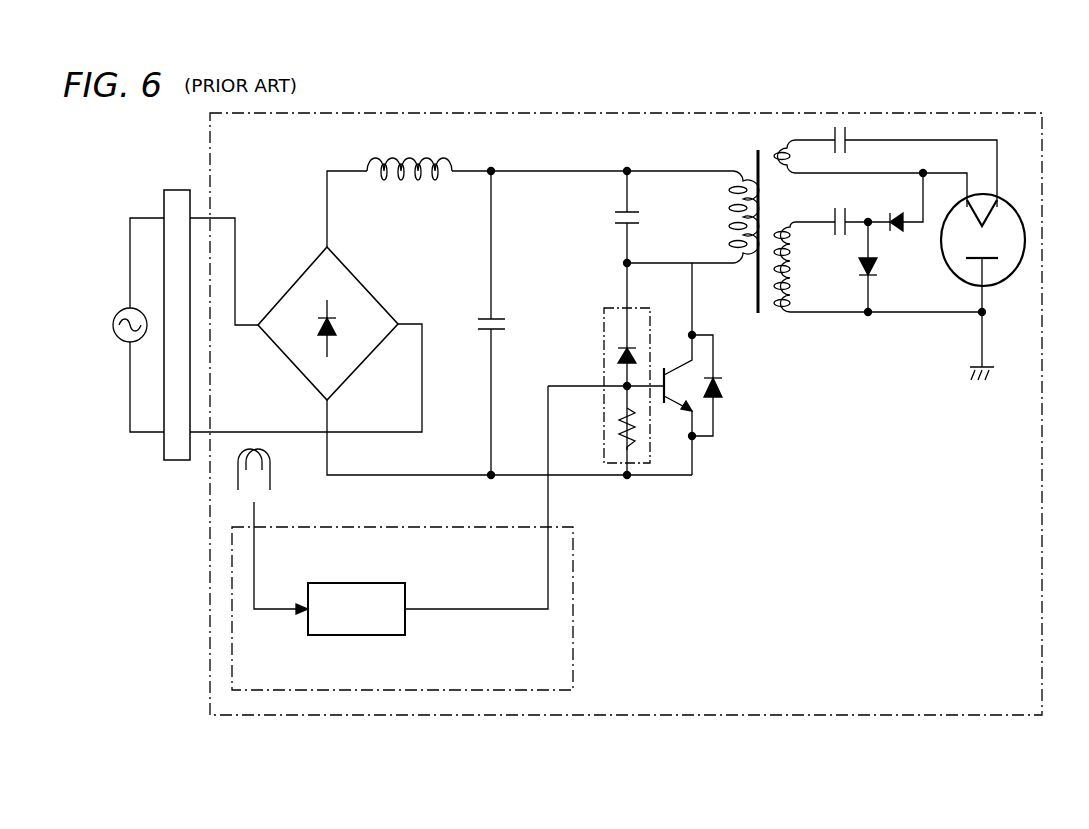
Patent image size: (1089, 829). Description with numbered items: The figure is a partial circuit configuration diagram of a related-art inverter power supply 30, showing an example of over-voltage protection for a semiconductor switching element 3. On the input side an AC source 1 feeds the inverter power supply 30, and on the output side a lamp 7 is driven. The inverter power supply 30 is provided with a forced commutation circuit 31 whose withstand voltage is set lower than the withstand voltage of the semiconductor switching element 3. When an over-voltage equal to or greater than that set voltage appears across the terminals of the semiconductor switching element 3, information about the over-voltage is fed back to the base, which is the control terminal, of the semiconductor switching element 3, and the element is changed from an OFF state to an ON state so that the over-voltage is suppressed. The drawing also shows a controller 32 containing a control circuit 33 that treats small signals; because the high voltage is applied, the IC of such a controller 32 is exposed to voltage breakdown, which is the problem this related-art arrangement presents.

The AC power supply 1 is at (113, 325).
The semiconductor switching element 3 is at (713, 414).
The discharge lamp 7 is at (1005, 197).
The inverter power supply 30 is at (925, 113).
The forced commutation circuit 31 is at (604, 325).
The controller 32 is at (573, 608).
The control circuit 33 is at (357, 636).